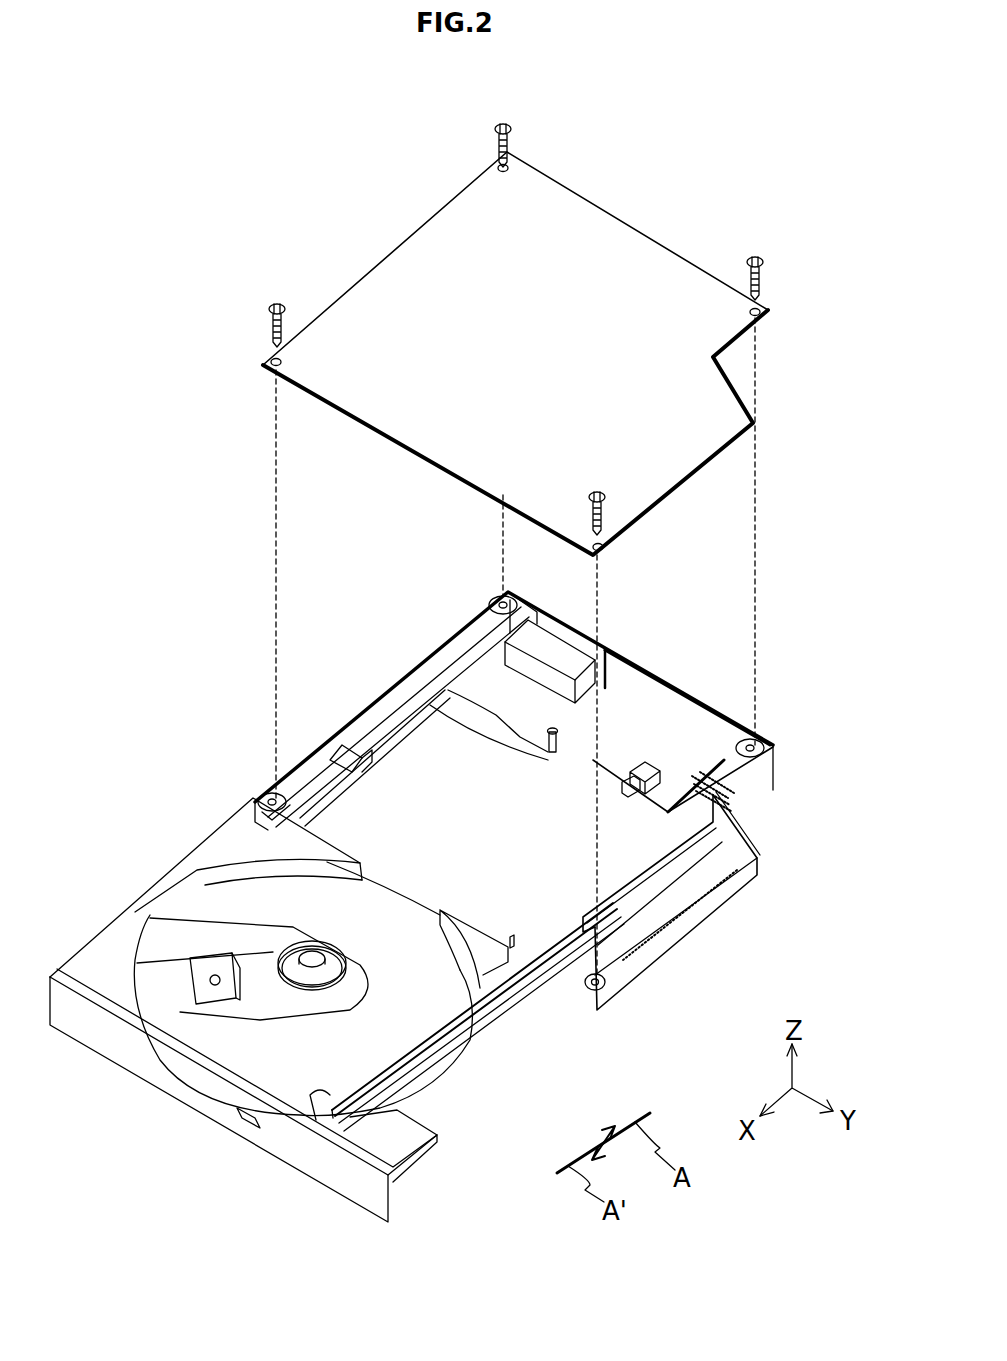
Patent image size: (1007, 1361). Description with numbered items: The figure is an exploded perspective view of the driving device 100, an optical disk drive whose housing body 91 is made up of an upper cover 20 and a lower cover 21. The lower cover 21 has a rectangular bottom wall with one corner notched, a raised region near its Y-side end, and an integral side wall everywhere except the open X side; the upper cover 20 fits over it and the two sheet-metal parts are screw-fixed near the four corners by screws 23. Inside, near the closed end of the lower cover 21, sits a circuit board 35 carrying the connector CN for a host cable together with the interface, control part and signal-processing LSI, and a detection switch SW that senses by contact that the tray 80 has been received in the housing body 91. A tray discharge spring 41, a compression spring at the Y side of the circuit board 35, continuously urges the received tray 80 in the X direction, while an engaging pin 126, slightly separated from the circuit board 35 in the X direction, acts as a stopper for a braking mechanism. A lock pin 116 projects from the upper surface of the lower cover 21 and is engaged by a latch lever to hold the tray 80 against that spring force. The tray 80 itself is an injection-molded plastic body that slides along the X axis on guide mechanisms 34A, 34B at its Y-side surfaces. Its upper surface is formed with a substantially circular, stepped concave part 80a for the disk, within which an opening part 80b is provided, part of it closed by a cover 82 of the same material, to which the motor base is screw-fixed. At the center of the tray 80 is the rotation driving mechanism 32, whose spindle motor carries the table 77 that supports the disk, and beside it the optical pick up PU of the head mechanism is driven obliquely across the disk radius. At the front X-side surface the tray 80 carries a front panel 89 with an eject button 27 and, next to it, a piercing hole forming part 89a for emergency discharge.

The driving device 100 is at (176, 166).
The upper cover 20 is at (690, 480).
The lower cover 21 is at (700, 700).
The screws 23 is at (762, 273).
The housing body 91 is at (843, 534).
The connector CN is at (560, 642).
The circuit board 35 is at (615, 715).
The detection switch SW is at (640, 774).
The guide mechanism 34B is at (348, 748).
The engaging pin 126 is at (443, 688).
The tray discharge spring 41 is at (714, 795).
The lock pin 116 is at (650, 972).
The guide mechanism 34A is at (510, 1002).
The tray 80 is at (115, 924).
The concave part 80a is at (477, 1036).
The opening part 80b is at (335, 1030).
The rotation driving mechanism 32 is at (289, 935).
The table 77 is at (236, 892).
The optical pick up PU is at (190, 968).
The front panel 89 is at (148, 1073).
The cover 82 is at (193, 1040).
The eject button 27 is at (245, 1120).
The piercing hole forming part 89a is at (270, 1130).